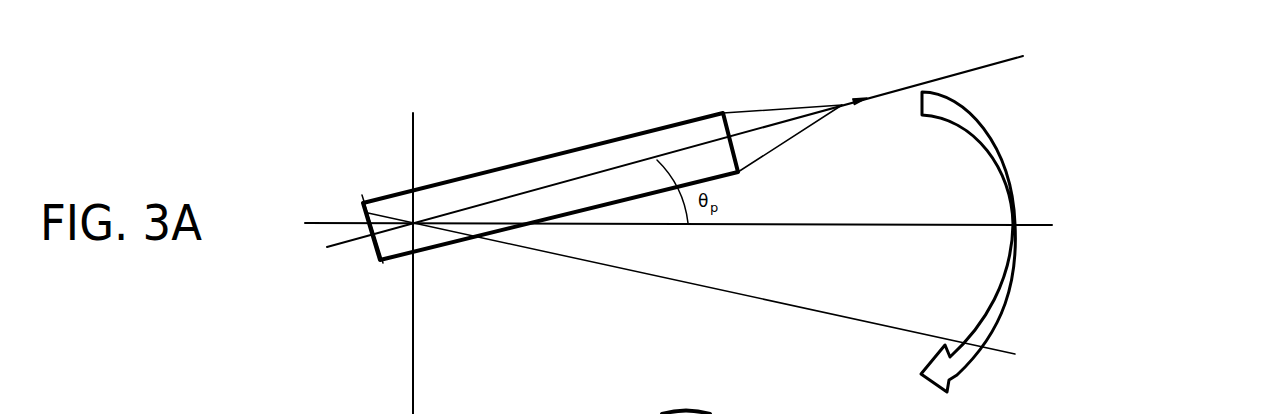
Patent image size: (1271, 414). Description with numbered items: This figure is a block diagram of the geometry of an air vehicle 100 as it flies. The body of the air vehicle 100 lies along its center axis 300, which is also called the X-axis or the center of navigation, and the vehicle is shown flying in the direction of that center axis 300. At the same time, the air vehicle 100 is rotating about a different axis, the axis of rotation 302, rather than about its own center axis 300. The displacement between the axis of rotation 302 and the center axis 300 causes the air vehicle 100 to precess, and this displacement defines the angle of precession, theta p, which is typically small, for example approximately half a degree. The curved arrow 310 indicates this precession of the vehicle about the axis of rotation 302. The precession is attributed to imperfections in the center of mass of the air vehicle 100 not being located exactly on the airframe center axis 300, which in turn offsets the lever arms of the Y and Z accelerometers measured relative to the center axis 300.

The air vehicle 100 is at (533, 157).
The center axis 300 is at (885, 92).
The axis of rotation 302 is at (1028, 229).
The precession arrow 310 is at (992, 310).